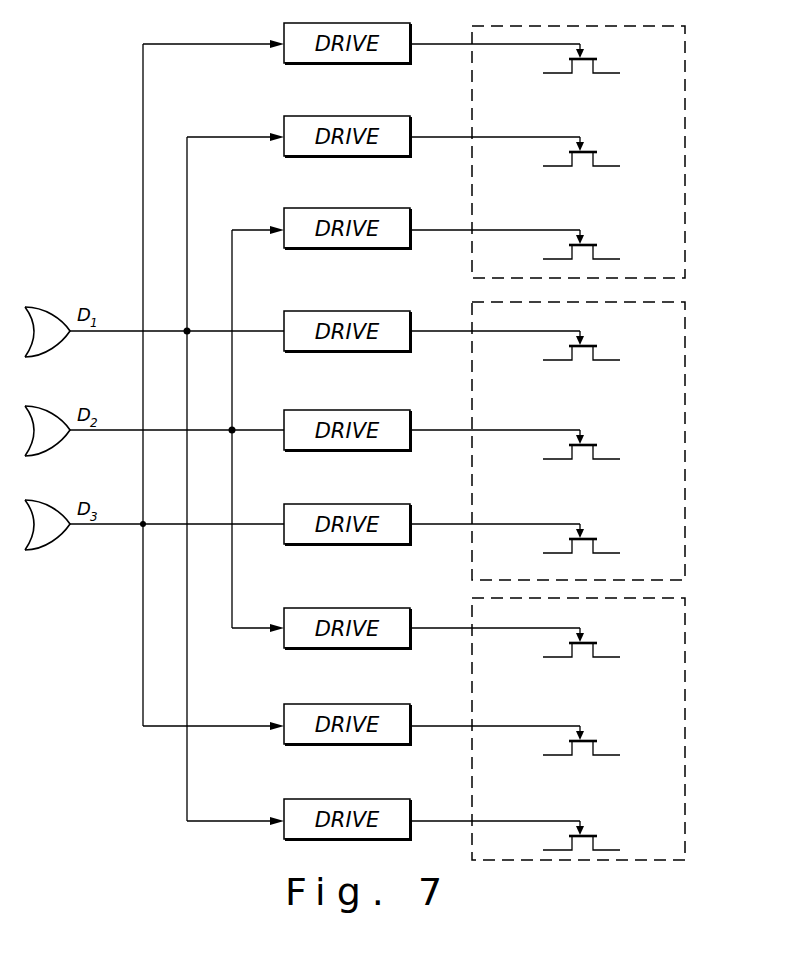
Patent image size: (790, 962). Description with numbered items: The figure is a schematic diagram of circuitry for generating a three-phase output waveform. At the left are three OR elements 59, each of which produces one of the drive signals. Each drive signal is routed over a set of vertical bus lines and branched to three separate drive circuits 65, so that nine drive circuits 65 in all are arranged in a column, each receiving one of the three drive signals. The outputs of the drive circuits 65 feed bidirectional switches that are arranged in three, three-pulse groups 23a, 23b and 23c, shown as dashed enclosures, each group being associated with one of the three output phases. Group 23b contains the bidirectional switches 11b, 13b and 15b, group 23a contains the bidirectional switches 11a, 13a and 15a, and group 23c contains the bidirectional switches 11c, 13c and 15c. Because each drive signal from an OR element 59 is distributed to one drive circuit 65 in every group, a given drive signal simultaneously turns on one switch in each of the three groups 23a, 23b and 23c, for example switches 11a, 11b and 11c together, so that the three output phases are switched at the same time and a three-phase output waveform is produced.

The OR element 59 is at (47, 549).
The drive circuit 65 is at (322, 799).
The switching transistor 11a is at (597, 353).
The switching transistor 11b is at (597, 66).
The switching transistor 11c is at (597, 650).
The switching transistor 13a is at (597, 452).
The switching transistor 13b is at (597, 159).
The switching transistor 13c is at (597, 748).
The switching transistor 15a is at (597, 546).
The switching transistor 15b is at (597, 252).
The switching transistor 15c is at (597, 843).
The three-pulse group 23a is at (655, 300).
The three-pulse group 23b is at (685, 67).
The three-pulse group 23c is at (688, 640).